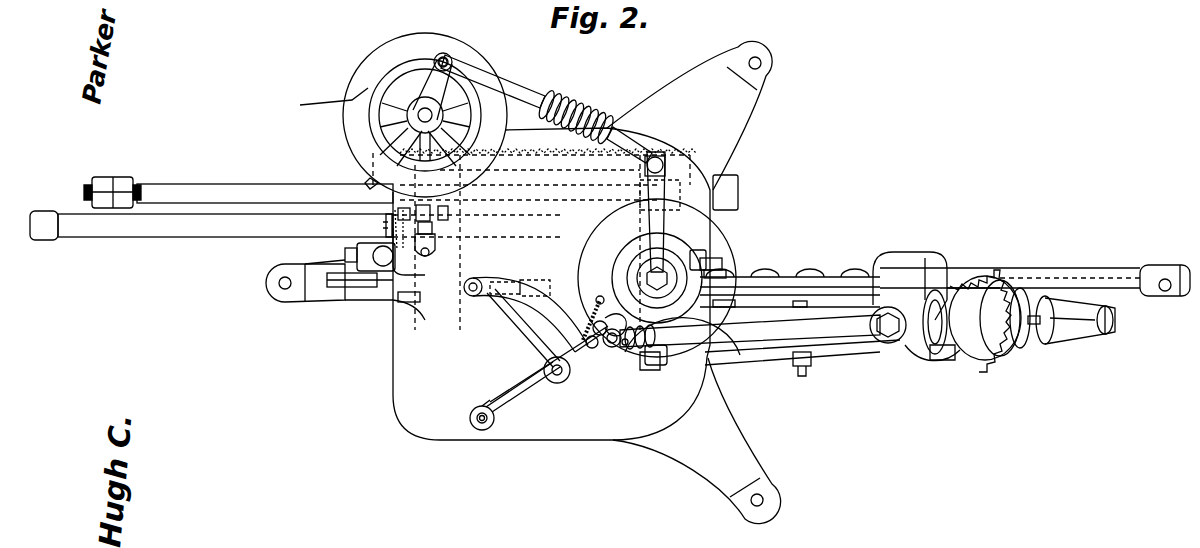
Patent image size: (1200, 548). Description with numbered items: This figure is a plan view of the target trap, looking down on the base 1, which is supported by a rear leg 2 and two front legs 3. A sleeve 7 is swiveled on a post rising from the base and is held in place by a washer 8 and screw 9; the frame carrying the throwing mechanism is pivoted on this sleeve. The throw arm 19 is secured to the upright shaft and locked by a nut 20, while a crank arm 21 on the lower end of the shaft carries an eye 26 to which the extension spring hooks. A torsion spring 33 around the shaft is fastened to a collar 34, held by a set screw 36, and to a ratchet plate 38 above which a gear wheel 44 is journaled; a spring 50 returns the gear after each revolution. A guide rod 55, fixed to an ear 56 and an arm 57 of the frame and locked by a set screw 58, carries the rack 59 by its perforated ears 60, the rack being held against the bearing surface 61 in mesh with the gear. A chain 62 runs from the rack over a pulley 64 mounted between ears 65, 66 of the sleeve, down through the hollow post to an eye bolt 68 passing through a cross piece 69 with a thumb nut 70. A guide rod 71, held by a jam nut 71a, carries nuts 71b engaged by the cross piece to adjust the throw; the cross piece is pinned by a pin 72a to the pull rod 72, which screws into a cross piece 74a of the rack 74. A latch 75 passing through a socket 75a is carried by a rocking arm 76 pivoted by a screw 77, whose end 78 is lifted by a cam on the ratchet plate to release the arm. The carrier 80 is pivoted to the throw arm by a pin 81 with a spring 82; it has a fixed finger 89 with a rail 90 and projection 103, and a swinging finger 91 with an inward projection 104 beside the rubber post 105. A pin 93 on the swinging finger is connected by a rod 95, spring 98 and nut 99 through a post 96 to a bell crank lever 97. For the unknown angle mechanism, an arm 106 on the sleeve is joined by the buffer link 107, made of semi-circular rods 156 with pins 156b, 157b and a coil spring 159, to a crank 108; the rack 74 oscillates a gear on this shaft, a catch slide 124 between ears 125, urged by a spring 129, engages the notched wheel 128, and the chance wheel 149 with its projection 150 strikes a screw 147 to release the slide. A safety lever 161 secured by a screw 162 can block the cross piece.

The base 1 is at (551, 284).
The rear leg 2 is at (352, 305).
The front legs 3 is at (694, 282).
The sleeve 7 is at (626, 262).
The washer 8 is at (632, 278).
The screw 9 is at (655, 272).
The throw arm 19 is at (704, 334).
The nut 20 is at (886, 340).
The crank arm 21 is at (1085, 336).
The eye 26 is at (1112, 318).
The torsion spring 33 is at (1025, 312).
The collar 34 is at (1048, 340).
The set screw 36 is at (1040, 318).
The ratchet plate 38 is at (1000, 348).
The gear wheel 44 is at (968, 340).
The spring 50 is at (925, 352).
The guide rod 55 is at (838, 282).
The ear 56 is at (720, 270).
The arm 57 is at (920, 272).
The set screw 58 is at (698, 252).
The rack 59 is at (1060, 272).
The perforated ears 60 is at (890, 268).
The bearing surface 61 is at (978, 285).
The chain 62 is at (820, 275).
The pulley 64 is at (790, 275).
The ear 65 is at (715, 258).
The ear 66 is at (760, 299).
The eye bolt 68 is at (325, 269).
The cross piece 69 is at (418, 300).
The thumb nut 70 is at (372, 290).
The guide rod 71 is at (238, 188).
The jam nut 71a is at (738, 192).
The nuts 71b is at (120, 183).
The pull rod 72 is at (211, 225).
The pin 72a is at (384, 226).
The rack 74 is at (528, 165).
The cross piece 74a is at (672, 165).
The latch 75 is at (658, 368).
The socket 75a is at (649, 367).
The rocking arm 76 is at (762, 360).
The screw 77 is at (801, 378).
The end of rocking arm 78 is at (950, 362).
The carrier 80 is at (599, 349).
The pin 81 is at (613, 348).
The spring 82 is at (638, 350).
The arm or finger 89 is at (523, 328).
The rail 90 is at (525, 290).
The swinging finger 91 is at (522, 390).
The pin 93 is at (567, 385).
The rod 95 is at (549, 364).
The post 96 is at (567, 338).
The bell crank lever 97 is at (530, 314).
The spring 98 is at (613, 324).
The nut 99 is at (588, 302).
The projection 103 is at (472, 297).
The inward projection 104 is at (463, 389).
The rubber post 105 is at (470, 419).
The arm 106 is at (660, 195).
The link 107 is at (520, 97).
The crank 108 is at (425, 123).
The catch slide 124 is at (435, 245).
The ears 125 is at (448, 212).
The notched wheel 128 is at (365, 92).
The spring 129 is at (431, 252).
The screw 147 is at (432, 232).
The chance wheel 149 is at (348, 117).
The projection 150 is at (365, 183).
The semi-circular rod 156 is at (457, 86).
The pin 156b is at (445, 56).
The pin 157b is at (656, 157).
The coil spring 159 is at (580, 114).
The lever 161 is at (352, 291).
The screw 162 is at (345, 287).